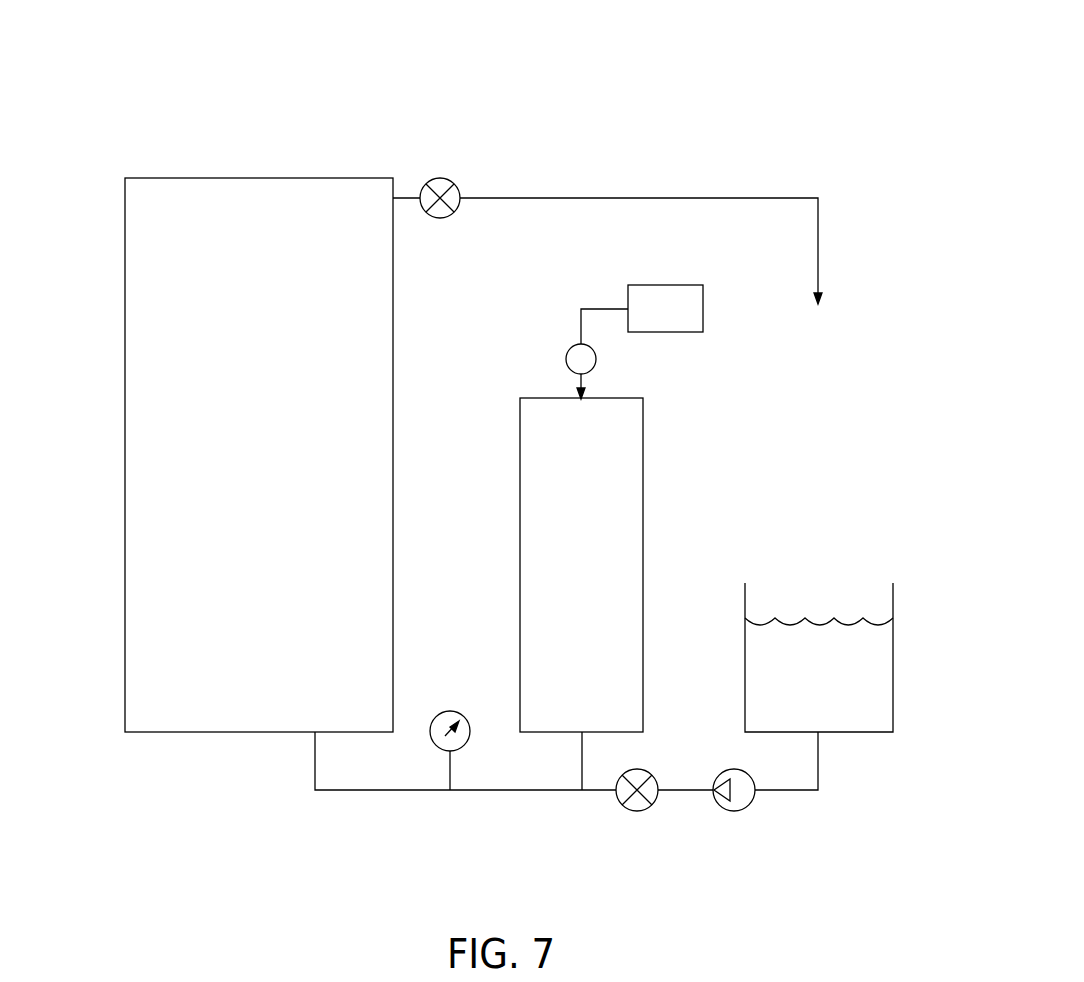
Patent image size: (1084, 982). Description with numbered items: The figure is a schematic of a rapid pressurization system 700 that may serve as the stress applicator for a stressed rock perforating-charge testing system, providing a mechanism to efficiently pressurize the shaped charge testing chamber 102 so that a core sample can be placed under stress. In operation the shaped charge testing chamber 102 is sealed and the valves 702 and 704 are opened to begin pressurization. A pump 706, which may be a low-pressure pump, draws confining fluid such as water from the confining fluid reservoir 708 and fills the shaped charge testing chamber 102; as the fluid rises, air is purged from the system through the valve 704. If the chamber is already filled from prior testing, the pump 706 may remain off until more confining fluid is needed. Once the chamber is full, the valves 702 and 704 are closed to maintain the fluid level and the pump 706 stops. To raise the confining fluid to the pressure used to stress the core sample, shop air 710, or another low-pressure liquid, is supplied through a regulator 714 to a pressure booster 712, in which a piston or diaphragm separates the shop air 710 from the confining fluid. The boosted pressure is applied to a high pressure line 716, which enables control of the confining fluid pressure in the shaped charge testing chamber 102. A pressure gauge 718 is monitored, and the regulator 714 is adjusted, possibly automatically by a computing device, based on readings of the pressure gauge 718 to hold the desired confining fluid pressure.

The rapid pressurization system 700 is at (636, 95).
The shaped charge testing chamber 102 is at (125, 630).
The valve 704 is at (443, 178).
The shop air 710 is at (704, 305).
The regulator 714 is at (596, 358).
The pressure booster 712 is at (643, 441).
The confining fluid reservoir 708 is at (893, 665).
The high pressure line 716 is at (527, 792).
The pressure gauge 718 is at (452, 712).
The valve 702 is at (638, 811).
The pump 706 is at (735, 811).